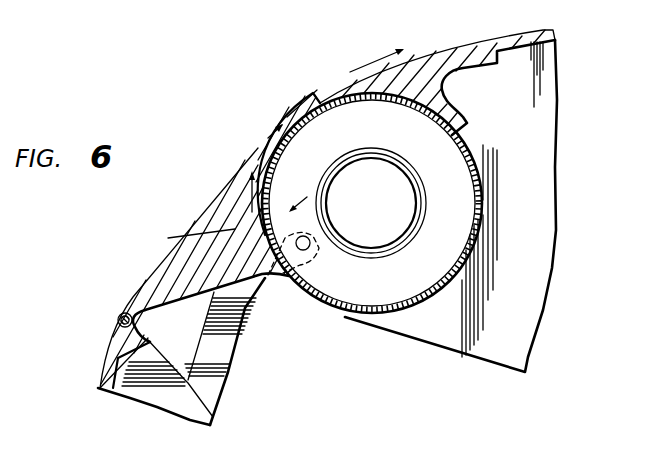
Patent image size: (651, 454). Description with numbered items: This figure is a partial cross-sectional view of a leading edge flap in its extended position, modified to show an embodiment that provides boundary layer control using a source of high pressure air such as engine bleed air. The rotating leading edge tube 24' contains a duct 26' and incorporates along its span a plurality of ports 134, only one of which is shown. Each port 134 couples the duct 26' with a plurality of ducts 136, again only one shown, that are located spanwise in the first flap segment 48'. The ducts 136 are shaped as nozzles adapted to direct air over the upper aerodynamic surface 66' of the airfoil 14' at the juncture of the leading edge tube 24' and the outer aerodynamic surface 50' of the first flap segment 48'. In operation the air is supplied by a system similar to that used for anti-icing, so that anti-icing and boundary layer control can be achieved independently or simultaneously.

The airfoil 14' is at (475, 206).
The rotating leading edge tube 24' is at (365, 181).
The duct 26' is at (476, 92).
The first flap segment 48' is at (194, 268).
The outer aerodynamic surface 50' is at (239, 164).
The upper aerodynamic surface 66' is at (437, 66).
The port 134 is at (283, 213).
The duct 136 is at (197, 242).